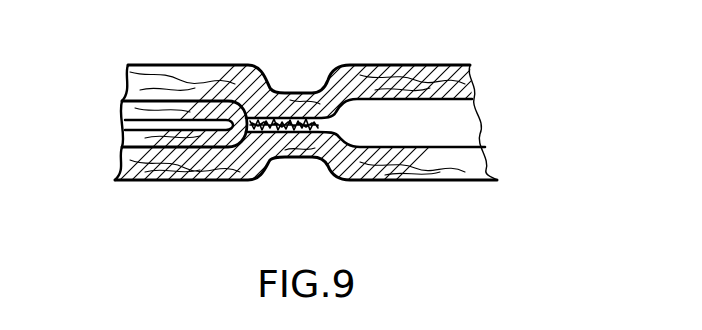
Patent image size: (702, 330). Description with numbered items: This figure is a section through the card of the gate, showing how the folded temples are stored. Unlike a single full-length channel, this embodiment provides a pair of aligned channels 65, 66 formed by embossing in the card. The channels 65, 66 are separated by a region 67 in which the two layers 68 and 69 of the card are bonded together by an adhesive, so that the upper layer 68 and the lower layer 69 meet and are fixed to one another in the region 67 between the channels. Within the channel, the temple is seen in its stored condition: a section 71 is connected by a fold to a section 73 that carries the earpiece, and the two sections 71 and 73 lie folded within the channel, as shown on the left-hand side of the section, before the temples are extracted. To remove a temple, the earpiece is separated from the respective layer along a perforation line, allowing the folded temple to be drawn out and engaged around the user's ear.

The channel 65 is at (208, 152).
The channel 66 is at (462, 135).
The region 67 is at (302, 134).
The layer 68 is at (422, 68).
The layer 69 is at (450, 170).
The section 71 is at (187, 118).
The section 73 is at (150, 162).